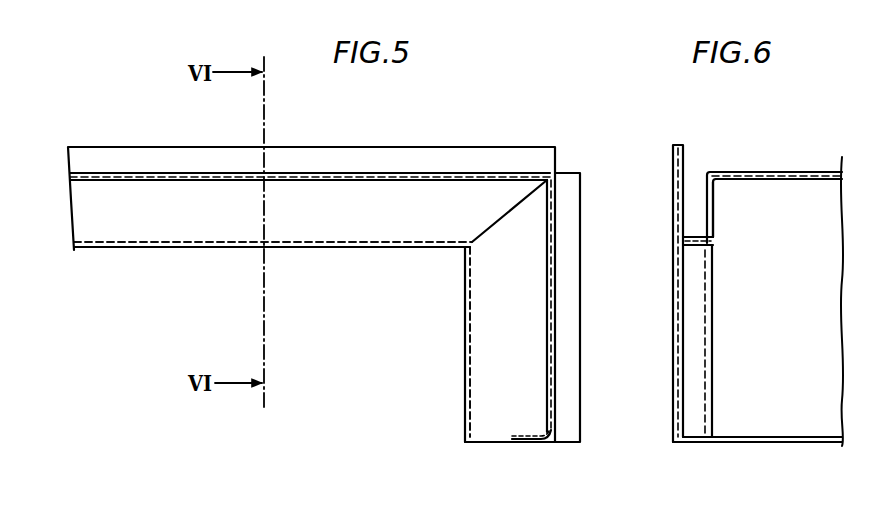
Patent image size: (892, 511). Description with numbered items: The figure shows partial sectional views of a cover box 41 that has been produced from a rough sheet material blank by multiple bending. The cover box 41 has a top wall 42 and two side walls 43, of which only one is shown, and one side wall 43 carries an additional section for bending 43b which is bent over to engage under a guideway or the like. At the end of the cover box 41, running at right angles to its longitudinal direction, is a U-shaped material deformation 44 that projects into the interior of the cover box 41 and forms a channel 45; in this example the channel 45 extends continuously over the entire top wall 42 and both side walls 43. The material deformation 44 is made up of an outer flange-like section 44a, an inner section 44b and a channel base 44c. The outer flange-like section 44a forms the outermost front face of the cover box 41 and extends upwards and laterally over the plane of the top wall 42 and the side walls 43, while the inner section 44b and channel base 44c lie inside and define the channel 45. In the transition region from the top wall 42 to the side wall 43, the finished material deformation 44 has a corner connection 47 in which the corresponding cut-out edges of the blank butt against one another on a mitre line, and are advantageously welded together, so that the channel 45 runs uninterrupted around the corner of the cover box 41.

In FIG. 5, the cover box 41 is at (126, 170).
In FIG. 6, the cover box 41 is at (751, 169).
In FIG. 5, the top wall 42 is at (365, 177).
In FIG. 6, the top wall 42 is at (796, 172).
In FIG. 5, the side wall 43 is at (553, 371).
In FIG. 6, the side wall 43 is at (752, 389).
In FIG. 5, the additional section for bending 43b is at (521, 444).
In FIG. 6, the additional section for bending 43b is at (800, 444).
In FIG. 5, the U-shaped material deformation 44 is at (367, 250).
In FIG. 6, the U-shaped material deformation 44 is at (719, 236).
In FIG. 6, the outer flange-like section 44a is at (672, 175).
In FIG. 6, the inner section 44b is at (713, 207).
In FIG. 5, the channel base 44c is at (190, 250).
In FIG. 6, the channel base 44c is at (696, 250).
In FIG. 6, the channel 45 is at (706, 184).
In FIG. 5, the corner connection 47 is at (503, 214).